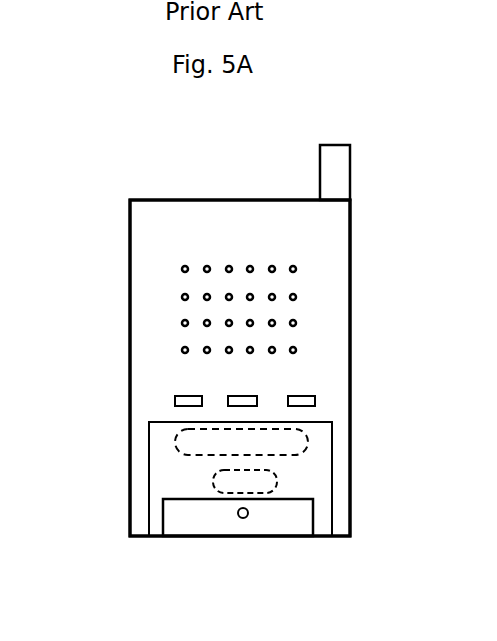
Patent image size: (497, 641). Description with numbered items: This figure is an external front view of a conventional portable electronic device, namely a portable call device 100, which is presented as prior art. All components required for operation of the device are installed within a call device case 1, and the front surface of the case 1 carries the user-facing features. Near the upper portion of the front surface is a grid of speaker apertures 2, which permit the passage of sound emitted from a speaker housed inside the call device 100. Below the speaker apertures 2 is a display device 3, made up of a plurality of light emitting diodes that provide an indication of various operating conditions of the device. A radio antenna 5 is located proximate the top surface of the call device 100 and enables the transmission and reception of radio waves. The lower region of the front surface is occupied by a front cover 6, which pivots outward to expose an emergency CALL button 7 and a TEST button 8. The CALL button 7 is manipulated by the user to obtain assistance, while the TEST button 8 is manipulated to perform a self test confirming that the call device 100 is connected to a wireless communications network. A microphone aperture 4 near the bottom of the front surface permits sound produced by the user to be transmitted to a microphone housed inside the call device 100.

The call device 100 is at (100, 218).
The case 1 is at (352, 330).
The speaker apertures 2 is at (296, 297).
The display device 3 is at (177, 396).
The microphone aperture 4 is at (243, 518).
The radio antenna 5 is at (350, 172).
The front cover 6 is at (188, 479).
The emergency CALL button 7 is at (308, 440).
The TEST button 8 is at (277, 482).